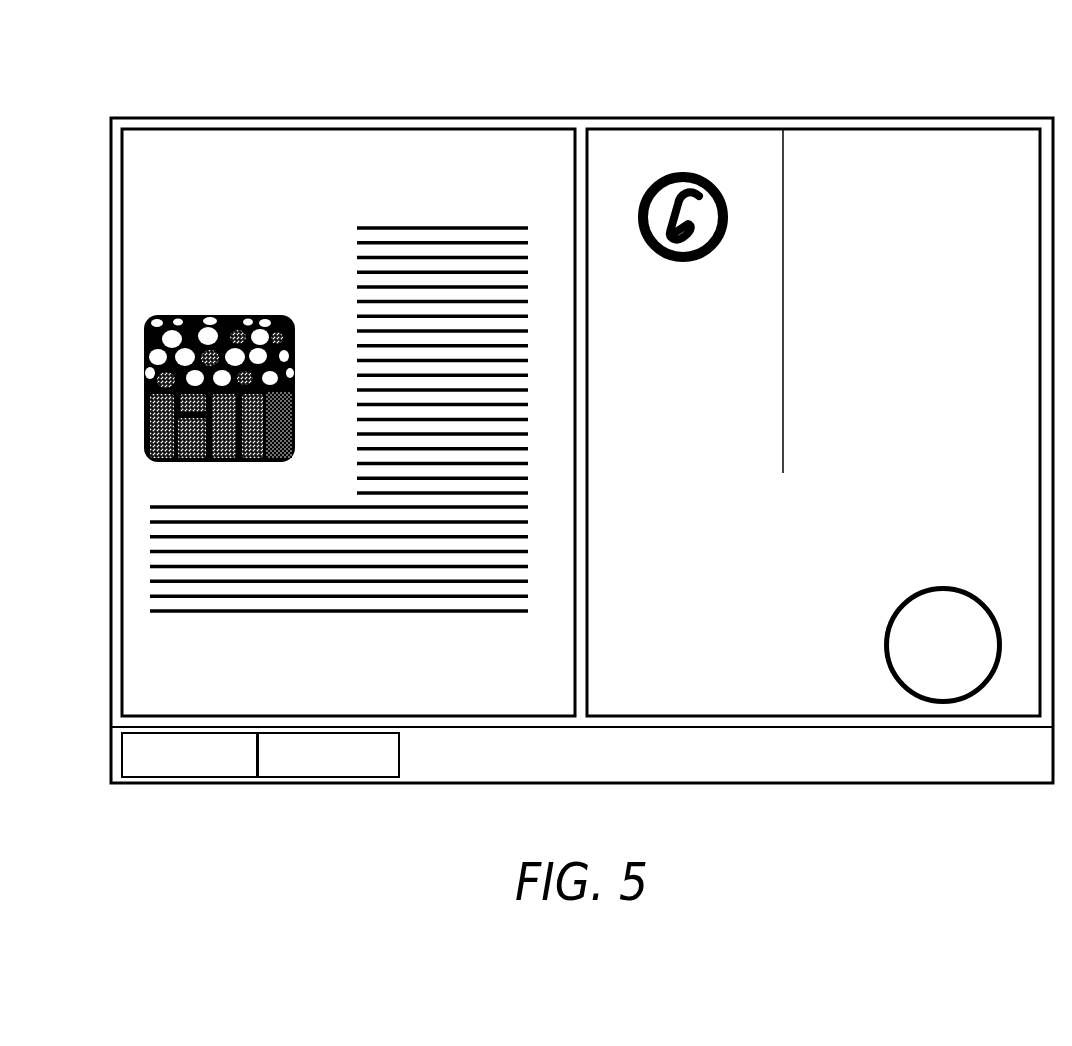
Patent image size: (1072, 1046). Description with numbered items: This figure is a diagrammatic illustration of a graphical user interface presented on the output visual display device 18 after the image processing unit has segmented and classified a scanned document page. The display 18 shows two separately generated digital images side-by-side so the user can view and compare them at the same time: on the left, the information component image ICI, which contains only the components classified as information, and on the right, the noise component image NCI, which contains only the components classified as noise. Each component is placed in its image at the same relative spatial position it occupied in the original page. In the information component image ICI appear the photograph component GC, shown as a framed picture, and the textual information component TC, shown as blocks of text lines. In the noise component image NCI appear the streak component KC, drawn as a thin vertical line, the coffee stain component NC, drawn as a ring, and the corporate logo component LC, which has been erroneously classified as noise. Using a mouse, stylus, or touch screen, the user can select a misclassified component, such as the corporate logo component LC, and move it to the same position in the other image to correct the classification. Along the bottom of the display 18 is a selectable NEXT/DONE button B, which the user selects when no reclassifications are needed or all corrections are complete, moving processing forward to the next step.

The display 18 is at (161, 113).
The information component image ICI is at (318, 153).
The photograph component GC is at (235, 306).
The textual information component TC is at (455, 222).
The noise component image NCI is at (842, 153).
The corporate logo component LC is at (673, 268).
The streak component KC is at (786, 355).
The coffee stain component NC is at (945, 586).
The NEXT/DONE button B is at (255, 784).